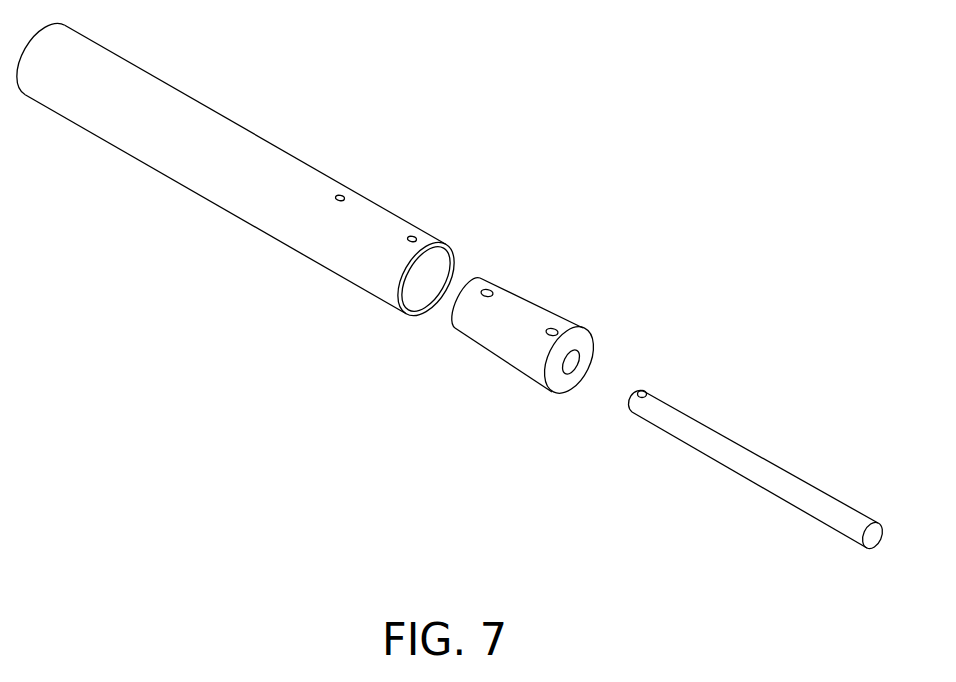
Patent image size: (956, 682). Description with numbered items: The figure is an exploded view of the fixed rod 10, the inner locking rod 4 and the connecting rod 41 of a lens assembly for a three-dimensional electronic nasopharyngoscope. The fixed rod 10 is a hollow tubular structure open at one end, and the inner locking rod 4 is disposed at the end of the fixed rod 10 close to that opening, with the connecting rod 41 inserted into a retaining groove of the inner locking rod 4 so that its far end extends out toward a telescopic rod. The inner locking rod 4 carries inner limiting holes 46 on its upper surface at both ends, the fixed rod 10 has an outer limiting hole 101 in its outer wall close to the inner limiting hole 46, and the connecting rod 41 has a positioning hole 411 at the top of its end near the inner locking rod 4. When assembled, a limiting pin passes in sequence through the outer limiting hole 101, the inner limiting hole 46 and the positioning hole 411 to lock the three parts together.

The fixed rod 10 is at (367, 243).
The outer limiting hole 101 is at (416, 236).
The inner locking rod 4 is at (523, 317).
The inner limiting hole 46 is at (490, 286).
The connecting rod 41 is at (722, 443).
The positioning hole 411 is at (645, 390).